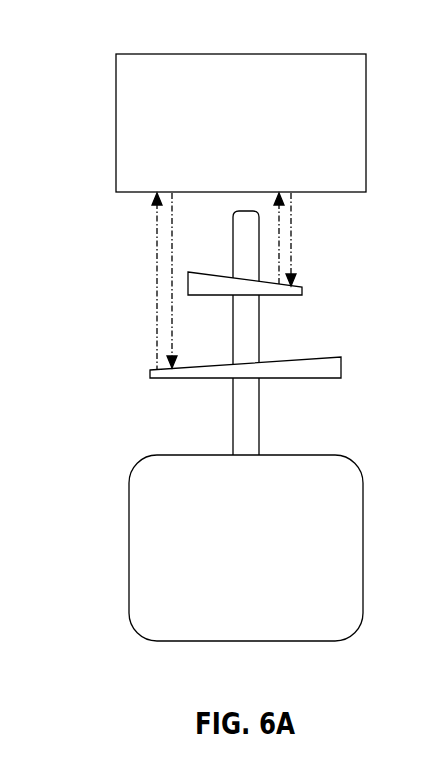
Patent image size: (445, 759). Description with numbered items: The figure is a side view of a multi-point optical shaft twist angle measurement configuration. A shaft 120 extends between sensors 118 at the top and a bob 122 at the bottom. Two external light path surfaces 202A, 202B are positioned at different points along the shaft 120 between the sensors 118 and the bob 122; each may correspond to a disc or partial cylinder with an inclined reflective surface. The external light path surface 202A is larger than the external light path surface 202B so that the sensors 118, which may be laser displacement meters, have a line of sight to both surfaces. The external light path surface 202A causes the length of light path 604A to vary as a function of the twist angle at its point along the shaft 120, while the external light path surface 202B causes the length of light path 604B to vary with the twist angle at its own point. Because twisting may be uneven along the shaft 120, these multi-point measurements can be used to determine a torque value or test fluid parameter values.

The sensors 118 is at (181, 54).
The shaft 120 is at (259, 431).
The bob 122 is at (337, 640).
The external light path surface 202A is at (290, 359).
The external light path surface 202B is at (271, 296).
The light path 604A is at (157, 281).
The light path 604B is at (293, 242).